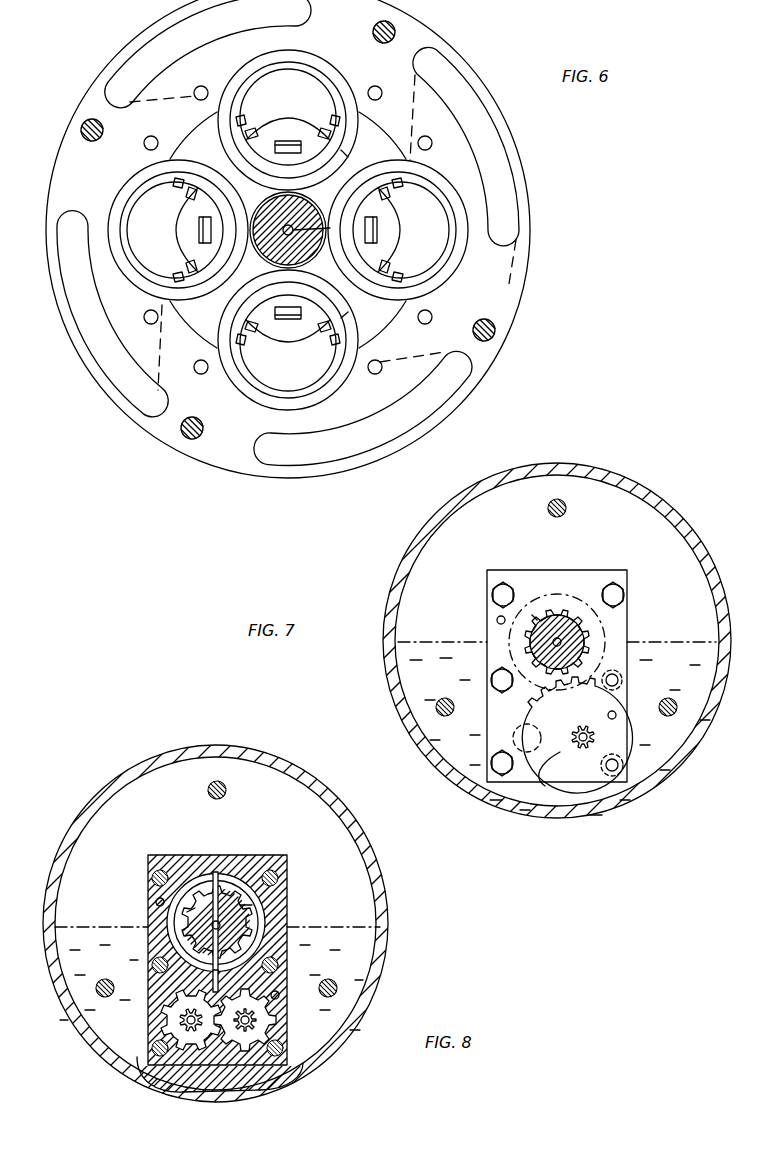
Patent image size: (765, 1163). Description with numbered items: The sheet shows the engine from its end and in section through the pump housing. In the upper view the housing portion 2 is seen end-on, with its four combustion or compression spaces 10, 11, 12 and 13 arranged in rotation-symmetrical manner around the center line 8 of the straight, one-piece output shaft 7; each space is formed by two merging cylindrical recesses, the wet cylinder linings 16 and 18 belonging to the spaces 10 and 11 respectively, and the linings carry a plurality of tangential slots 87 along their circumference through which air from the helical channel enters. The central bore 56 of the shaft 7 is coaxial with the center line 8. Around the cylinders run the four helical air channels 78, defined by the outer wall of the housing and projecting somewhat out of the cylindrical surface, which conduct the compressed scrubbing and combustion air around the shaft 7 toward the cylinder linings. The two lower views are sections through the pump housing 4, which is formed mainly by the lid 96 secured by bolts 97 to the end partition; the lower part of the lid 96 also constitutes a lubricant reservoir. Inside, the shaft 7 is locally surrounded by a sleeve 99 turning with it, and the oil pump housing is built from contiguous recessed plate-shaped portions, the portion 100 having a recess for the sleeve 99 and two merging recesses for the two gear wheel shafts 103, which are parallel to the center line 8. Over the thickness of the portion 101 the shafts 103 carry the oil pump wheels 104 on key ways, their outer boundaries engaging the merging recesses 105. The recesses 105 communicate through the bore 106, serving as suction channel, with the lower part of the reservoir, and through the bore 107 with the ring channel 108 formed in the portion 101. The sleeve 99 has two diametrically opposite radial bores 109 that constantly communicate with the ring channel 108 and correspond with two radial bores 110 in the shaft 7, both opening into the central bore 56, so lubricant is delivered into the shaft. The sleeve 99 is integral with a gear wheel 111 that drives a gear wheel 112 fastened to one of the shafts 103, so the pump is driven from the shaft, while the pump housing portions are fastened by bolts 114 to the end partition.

In FIG. 6, the housing portion 2 is at (442, 29).
In FIG. 7, the pump housing 4 is at (671, 499).
In FIG. 8, the pump housing 4 is at (146, 754).
In FIG. 6, the output shaft 7 is at (243, 223).
In FIG. 7, the output shaft 7 is at (535, 614).
In FIG. 8, the output shaft 7 is at (187, 912).
In FIG. 6, the center line 8 is at (330, 229).
In FIG. 7, the center line 8 is at (563, 616).
In FIG. 6, the combustion space 10 is at (296, 99).
In FIG. 6, the combustion space 11 is at (296, 381).
In FIG. 6, the combustion space 12 is at (156, 231).
In FIG. 6, the combustion space 13 is at (436, 231).
In FIG. 6, the cylinder lining 16 is at (341, 150).
In FIG. 6, the cylinder lining 18 is at (341, 318).
In FIG. 6, the bore 56 is at (318, 222).
In FIG. 7, the bore 56 is at (572, 625).
In FIG. 8, the bore 56 is at (175, 917).
In FIG. 6, the air channel 78 is at (145, 52).
In FIG. 6, the slot 87 is at (322, 136).
In FIG. 7, the lid 96 is at (430, 522).
In FIG. 8, the lid 96 is at (278, 763).
In FIG. 7, the bolt 97 is at (566, 508).
In FIG. 8, the bolt 97 is at (227, 790).
In FIG. 7, the sleeve 99 is at (523, 650).
In FIG. 8, the sleeve 99 is at (175, 895).
In FIG. 7, the pump housing portion 100 is at (492, 628).
In FIG. 8, the pump housing portion 101 is at (257, 860).
In FIG. 7, the gear wheel shaft 103 is at (530, 745).
In FIG. 8, the gear wheel shaft 103 is at (183, 1080).
In FIG. 8, the oil pump wheel 104 is at (273, 1020).
In FIG. 8, the recess 105 is at (270, 1032).
In FIG. 8, the bore 106 is at (213, 1087).
In FIG. 8, the bore 107 is at (216, 982).
In FIG. 8, the ring channel 108 is at (187, 887).
In FIG. 8, the radial bore 109 is at (225, 880).
In FIG. 8, the radial bore 110 is at (261, 907).
In FIG. 7, the gear wheel 111 is at (600, 660).
In FIG. 7, the gear wheel 112 is at (617, 695).
In FIG. 7, the bolt 114 is at (492, 592).
In FIG. 8, the bolt 114 is at (152, 876).